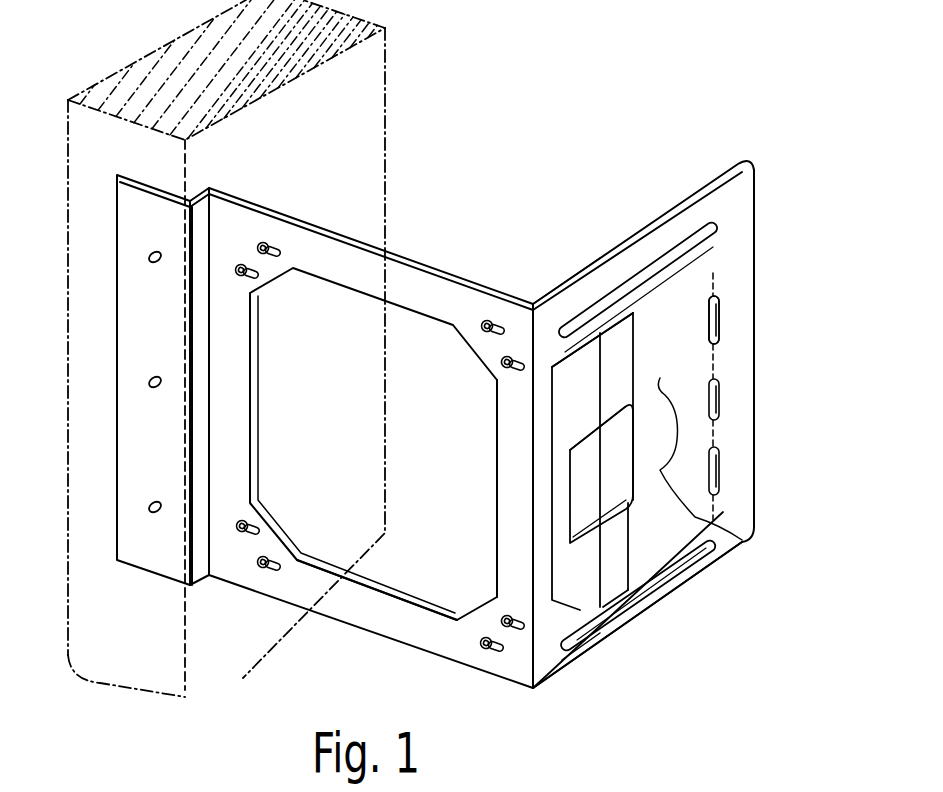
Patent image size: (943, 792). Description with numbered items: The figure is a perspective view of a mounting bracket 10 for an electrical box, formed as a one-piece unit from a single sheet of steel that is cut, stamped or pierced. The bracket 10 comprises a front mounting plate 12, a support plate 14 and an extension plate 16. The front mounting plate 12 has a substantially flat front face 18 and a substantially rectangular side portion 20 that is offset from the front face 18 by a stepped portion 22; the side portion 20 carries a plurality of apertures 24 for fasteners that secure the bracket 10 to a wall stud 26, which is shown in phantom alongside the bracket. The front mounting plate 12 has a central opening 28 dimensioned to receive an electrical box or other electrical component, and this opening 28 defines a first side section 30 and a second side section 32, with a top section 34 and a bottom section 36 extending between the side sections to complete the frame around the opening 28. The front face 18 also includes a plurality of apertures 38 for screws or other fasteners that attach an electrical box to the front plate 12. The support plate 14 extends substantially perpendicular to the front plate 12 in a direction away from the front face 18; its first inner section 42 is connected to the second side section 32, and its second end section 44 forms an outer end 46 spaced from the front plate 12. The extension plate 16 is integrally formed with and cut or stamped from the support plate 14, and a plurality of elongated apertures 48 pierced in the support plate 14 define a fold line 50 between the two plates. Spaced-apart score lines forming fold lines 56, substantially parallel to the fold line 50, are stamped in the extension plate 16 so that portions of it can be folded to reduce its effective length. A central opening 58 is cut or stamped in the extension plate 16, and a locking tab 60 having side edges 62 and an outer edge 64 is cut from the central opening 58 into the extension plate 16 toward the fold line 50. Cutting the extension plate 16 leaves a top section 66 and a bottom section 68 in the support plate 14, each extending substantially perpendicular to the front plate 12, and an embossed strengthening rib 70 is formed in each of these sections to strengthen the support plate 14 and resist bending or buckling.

The mounting bracket 10 is at (598, 53).
The front mounting plate 12 is at (385, 448).
The support plate 14 is at (648, 414).
The extension plate 16 is at (665, 520).
The front face 18 is at (303, 257).
The side portion 20 is at (130, 426).
The stepped portion 22 is at (197, 550).
The apertures 24 is at (150, 256).
The wall stud 26 is at (385, 97).
The central opening 28 is at (398, 545).
The first side section 30 is at (370, 472).
The second side section 32 is at (510, 450).
The top section 34 is at (427, 287).
The bottom section 36 is at (395, 625).
The apertures 38 is at (473, 642).
The first inner section 42 is at (543, 613).
The second end section 44 is at (735, 462).
The outer end 46 is at (757, 242).
The elongated apertures 48 is at (713, 323).
The fold line 50 is at (713, 290).
The fold lines 56 is at (637, 347).
The central opening 58 is at (628, 467).
The locking tab 60 is at (630, 474).
The side edges 62 is at (660, 378).
The outer edge 64 is at (637, 452).
The top section 66 is at (578, 300).
The bottom section 68 is at (603, 635).
The embossed strengthening rib 70 is at (670, 260).